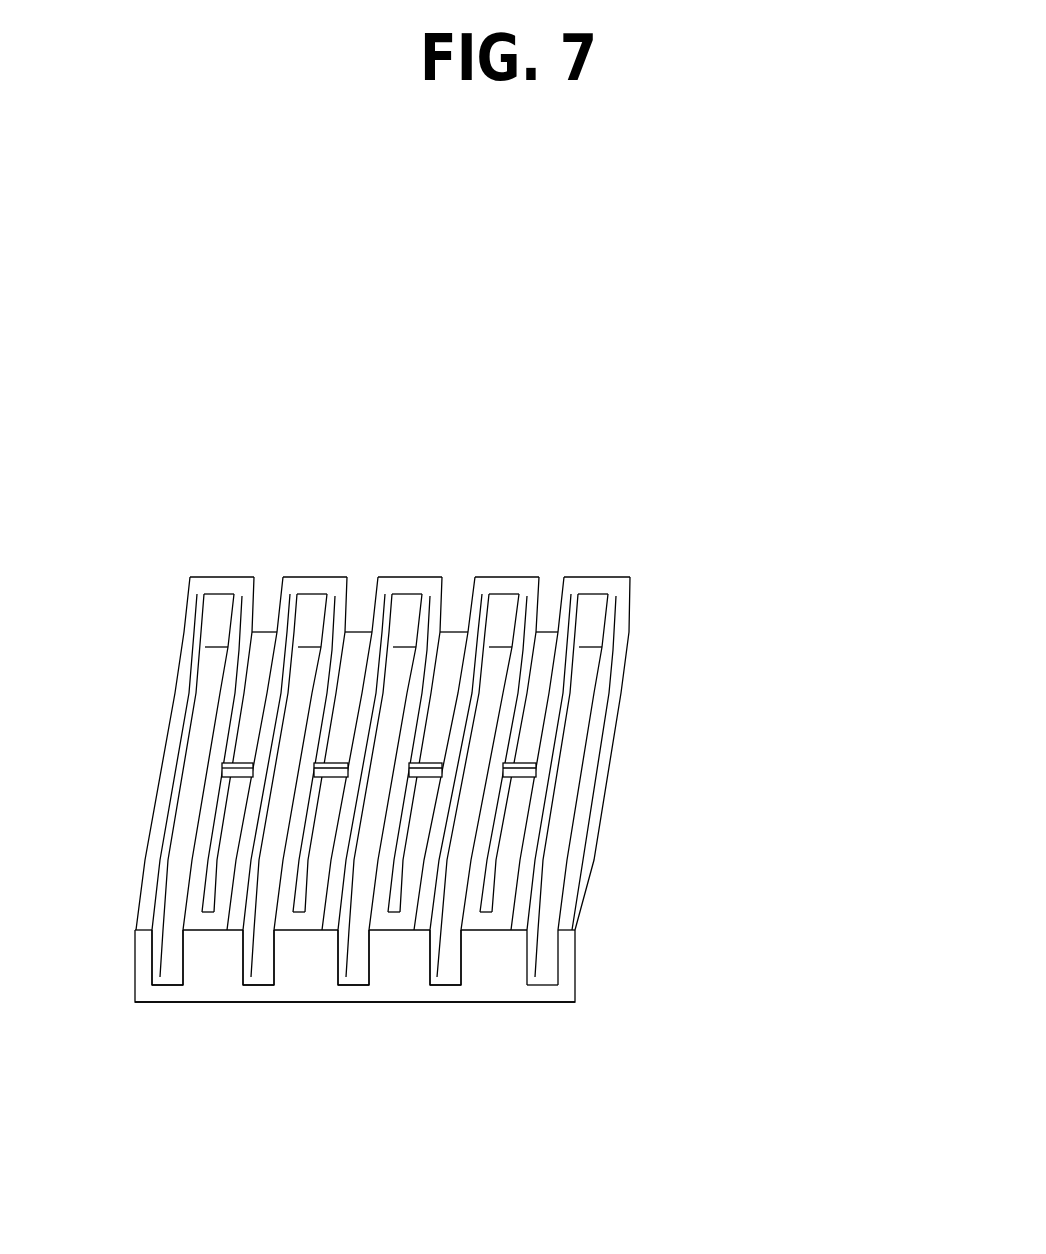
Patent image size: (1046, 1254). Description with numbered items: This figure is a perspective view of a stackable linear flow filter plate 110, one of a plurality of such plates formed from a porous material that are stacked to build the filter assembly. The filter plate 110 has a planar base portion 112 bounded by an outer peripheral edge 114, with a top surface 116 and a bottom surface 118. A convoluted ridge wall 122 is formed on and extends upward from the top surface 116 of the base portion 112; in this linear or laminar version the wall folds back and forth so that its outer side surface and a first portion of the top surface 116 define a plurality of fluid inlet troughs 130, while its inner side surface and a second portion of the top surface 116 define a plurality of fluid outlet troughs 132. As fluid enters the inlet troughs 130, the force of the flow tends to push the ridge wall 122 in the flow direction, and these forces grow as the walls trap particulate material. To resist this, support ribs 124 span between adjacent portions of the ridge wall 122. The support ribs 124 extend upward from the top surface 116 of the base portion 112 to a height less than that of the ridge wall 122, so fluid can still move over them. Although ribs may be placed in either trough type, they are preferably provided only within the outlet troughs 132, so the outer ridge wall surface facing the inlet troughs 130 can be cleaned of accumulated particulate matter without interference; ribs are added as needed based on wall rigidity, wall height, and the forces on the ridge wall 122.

The filter plate 110 is at (750, 465).
The planar base portion 112 is at (210, 990).
The outer peripheral edge 114 is at (610, 776).
The top surface 116 is at (448, 968).
The bottom surface 118 is at (560, 1002).
The convoluted ridge wall 122 is at (153, 808).
The support ribs 124 is at (525, 765).
The fluid inlet troughs 130 is at (360, 973).
The fluid outlet troughs 132 is at (450, 612).